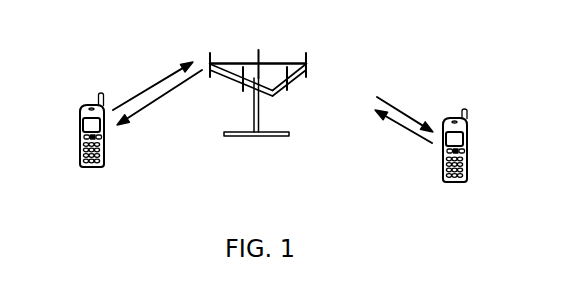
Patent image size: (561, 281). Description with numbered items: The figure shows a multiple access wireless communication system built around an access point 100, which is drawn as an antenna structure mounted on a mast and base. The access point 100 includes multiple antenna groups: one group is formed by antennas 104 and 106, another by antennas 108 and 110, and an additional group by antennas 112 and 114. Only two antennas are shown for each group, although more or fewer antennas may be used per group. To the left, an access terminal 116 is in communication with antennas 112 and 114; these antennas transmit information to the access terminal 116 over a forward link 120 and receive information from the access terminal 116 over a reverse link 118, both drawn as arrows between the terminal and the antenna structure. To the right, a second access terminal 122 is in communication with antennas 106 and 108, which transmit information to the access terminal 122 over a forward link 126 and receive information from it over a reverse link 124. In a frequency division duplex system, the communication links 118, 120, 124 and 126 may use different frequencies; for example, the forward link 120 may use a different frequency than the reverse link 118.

The access point 100 is at (266, 137).
The antenna 104 is at (276, 96).
The antenna 106 is at (291, 86).
The antenna 108 is at (308, 71).
The antenna 110 is at (260, 52).
The antenna 112 is at (209, 58).
The antenna 114 is at (240, 88).
The access terminal 116 is at (78, 123).
The reverse link 118 is at (158, 82).
The forward link 120 is at (150, 102).
The access terminal 122 is at (468, 140).
The reverse link 124 is at (410, 130).
The forward link 126 is at (403, 112).